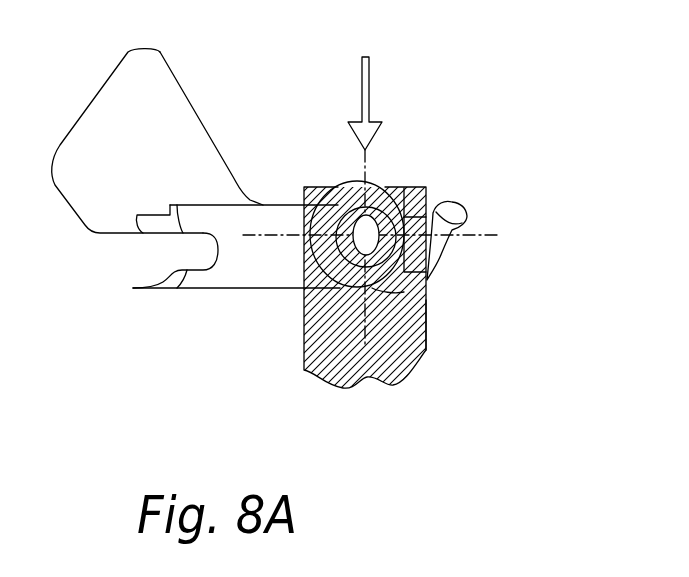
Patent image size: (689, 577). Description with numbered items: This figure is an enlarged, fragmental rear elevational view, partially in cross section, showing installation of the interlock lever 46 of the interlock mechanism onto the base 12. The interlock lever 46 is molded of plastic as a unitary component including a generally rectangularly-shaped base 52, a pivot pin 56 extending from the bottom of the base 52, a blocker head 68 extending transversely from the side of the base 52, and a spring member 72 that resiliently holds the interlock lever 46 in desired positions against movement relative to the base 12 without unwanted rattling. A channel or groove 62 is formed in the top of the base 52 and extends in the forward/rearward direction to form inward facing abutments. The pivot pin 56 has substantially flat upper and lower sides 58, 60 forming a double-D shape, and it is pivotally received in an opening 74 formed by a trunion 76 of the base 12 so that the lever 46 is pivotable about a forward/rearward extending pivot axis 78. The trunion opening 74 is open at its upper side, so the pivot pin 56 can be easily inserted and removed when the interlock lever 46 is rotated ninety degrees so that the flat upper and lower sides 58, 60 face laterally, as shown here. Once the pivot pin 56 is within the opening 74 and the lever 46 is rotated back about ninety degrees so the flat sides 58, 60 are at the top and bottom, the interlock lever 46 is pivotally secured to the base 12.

The base 12 is at (322, 378).
The interlock lever 46 is at (99, 73).
The base 52 is at (275, 288).
The pivot pin 56 is at (378, 185).
The upper side 58 is at (332, 185).
The lower side 60 is at (388, 188).
The groove 62 is at (187, 250).
The blocker head 68 is at (185, 92).
The spring member 72 is at (445, 254).
The opening 74 is at (460, 224).
The trunion 76 is at (426, 330).
The pivot axis 78 is at (388, 291).